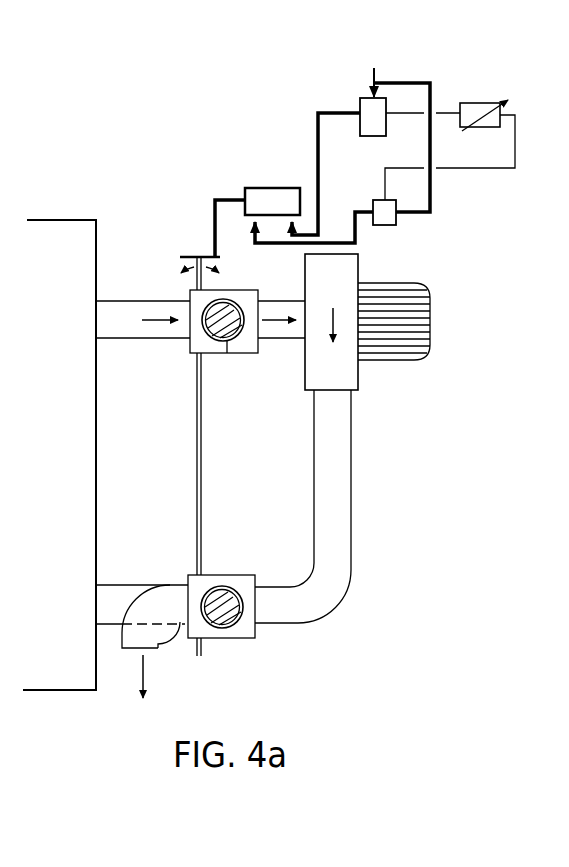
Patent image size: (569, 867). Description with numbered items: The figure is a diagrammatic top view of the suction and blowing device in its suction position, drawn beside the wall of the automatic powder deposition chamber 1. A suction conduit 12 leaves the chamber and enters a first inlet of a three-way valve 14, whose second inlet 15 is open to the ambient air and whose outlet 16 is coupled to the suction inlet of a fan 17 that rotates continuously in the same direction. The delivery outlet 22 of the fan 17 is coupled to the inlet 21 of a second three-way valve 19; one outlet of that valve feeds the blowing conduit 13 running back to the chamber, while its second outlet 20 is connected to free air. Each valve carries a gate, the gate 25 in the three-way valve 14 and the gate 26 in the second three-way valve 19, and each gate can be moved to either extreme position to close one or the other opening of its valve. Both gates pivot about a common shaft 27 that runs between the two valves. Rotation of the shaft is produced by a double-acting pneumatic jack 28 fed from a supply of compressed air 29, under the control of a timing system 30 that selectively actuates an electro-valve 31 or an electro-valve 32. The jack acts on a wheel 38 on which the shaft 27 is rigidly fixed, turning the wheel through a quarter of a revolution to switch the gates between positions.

The automatic powder deposition chamber 1 is at (71, 229).
The suction conduit 12 is at (113, 312).
The blowing conduit 13 is at (108, 603).
The three-way valve 14 is at (233, 290).
The second inlet 15 is at (246, 332).
The outlet 16 is at (258, 312).
The fan 17 is at (353, 272).
The second three-way valve 19 is at (230, 575).
The second outlet 20 is at (157, 645).
The inlet 21 is at (258, 602).
The delivery outlet 22 is at (338, 392).
The gate 25 is at (230, 342).
The gate 26 is at (237, 623).
The common shaft 27 is at (205, 463).
The double-acting pneumatic jack 28 is at (253, 203).
The supply of compressed air 29 is at (373, 68).
The timing system 30 is at (470, 112).
The electro-valve 31 is at (390, 221).
The electro-valve 32 is at (370, 123).
The wheel 38 is at (181, 256).